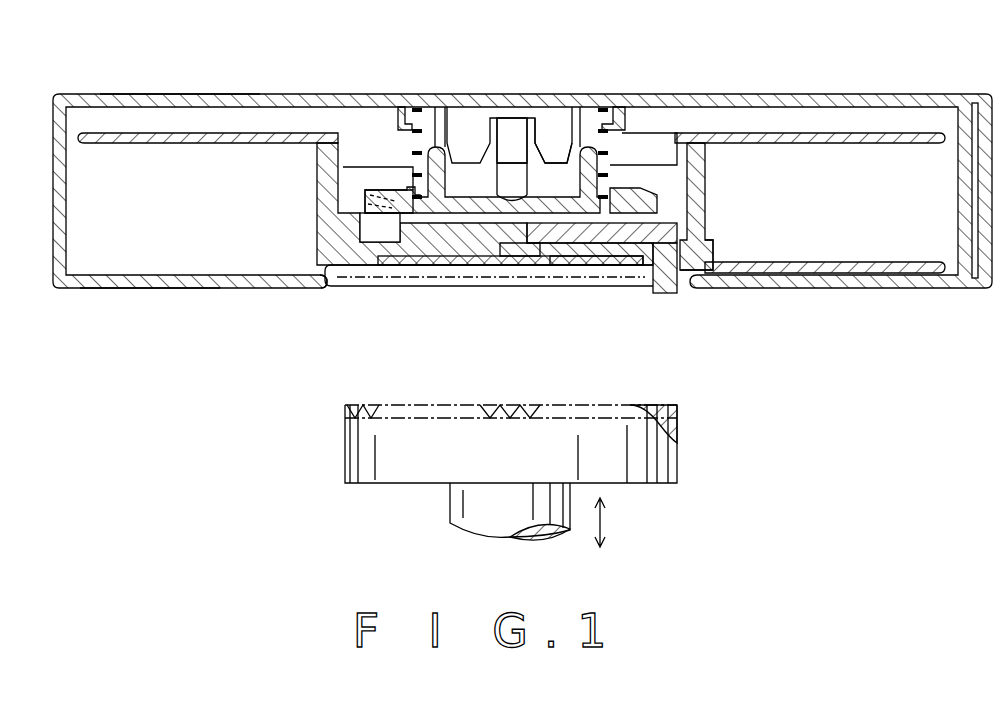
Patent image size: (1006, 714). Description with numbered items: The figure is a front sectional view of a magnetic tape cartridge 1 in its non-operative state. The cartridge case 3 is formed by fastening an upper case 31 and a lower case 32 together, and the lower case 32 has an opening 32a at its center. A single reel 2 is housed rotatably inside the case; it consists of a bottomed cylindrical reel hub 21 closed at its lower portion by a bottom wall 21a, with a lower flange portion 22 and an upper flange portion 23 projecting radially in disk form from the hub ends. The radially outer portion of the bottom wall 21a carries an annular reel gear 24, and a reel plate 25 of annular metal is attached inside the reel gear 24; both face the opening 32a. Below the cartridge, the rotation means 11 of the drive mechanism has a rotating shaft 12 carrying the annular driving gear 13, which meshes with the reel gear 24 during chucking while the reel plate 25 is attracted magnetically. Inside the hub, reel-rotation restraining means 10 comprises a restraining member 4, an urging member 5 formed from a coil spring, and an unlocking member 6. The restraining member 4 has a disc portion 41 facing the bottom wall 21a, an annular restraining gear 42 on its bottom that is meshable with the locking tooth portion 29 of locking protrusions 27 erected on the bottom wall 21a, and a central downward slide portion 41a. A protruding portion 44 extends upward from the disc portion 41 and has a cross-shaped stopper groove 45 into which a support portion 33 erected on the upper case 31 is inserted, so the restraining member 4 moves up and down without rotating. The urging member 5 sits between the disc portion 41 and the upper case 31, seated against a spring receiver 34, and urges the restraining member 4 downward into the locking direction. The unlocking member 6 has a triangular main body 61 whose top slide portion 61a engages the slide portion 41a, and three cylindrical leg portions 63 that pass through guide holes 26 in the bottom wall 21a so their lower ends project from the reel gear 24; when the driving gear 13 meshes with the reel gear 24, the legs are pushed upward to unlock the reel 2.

The magnetic tape cartridge 1 is at (196, 41).
The reel 2 is at (231, 129).
The cartridge case 3 is at (849, 92).
The restraining member 4 is at (397, 176).
The urging member 5 is at (613, 131).
The unlocking member 6 is at (516, 248).
The reel-rotation restraining means 10 is at (643, 162).
The rotation means 11 is at (342, 450).
The rotating shaft 12 is at (449, 502).
The driving gear 13 is at (493, 405).
The reel hub 21 is at (707, 171).
The bottom wall 21a is at (548, 260).
The lower flange portion 22 is at (848, 262).
The upper flange portion 23 is at (867, 144).
The reel gear 24 is at (352, 287).
The reel plate 25 is at (380, 250).
The guide holes 26 is at (708, 252).
The locking protrusions 27 is at (360, 217).
The locking tooth portion 29 is at (363, 209).
The upper case 31 is at (170, 93).
The lower case 32 is at (135, 289).
The opening 32a is at (321, 286).
The support portion 33 is at (507, 137).
The spring receiver 34 is at (403, 126).
The disc portion 41 is at (455, 214).
The slide portion 41a is at (543, 157).
The restraining gear 42 is at (365, 198).
The protruding portion 44 is at (435, 143).
The stopper groove 45 is at (570, 177).
The main body 61 is at (608, 236).
The slide portion 61a is at (508, 256).
The leg portions 63 is at (664, 285).